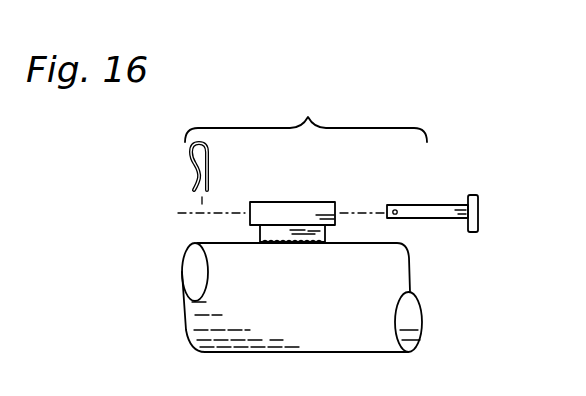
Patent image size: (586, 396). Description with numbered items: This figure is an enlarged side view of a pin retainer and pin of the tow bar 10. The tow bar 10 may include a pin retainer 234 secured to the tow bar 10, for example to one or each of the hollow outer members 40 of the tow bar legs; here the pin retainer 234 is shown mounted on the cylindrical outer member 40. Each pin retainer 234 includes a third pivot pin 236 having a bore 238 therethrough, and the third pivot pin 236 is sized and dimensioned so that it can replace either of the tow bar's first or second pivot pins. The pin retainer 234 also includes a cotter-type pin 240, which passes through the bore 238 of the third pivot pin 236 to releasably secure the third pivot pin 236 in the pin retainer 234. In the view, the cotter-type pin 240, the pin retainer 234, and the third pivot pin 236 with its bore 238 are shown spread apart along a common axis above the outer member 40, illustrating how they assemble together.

The tow bar 10 is at (443, 119).
The hollow outer member 40 is at (407, 273).
The pin retainer 234 is at (293, 202).
The third pivot pin 236 is at (443, 205).
The bore 238 is at (395, 210).
The cotter-type pin 240 is at (192, 177).